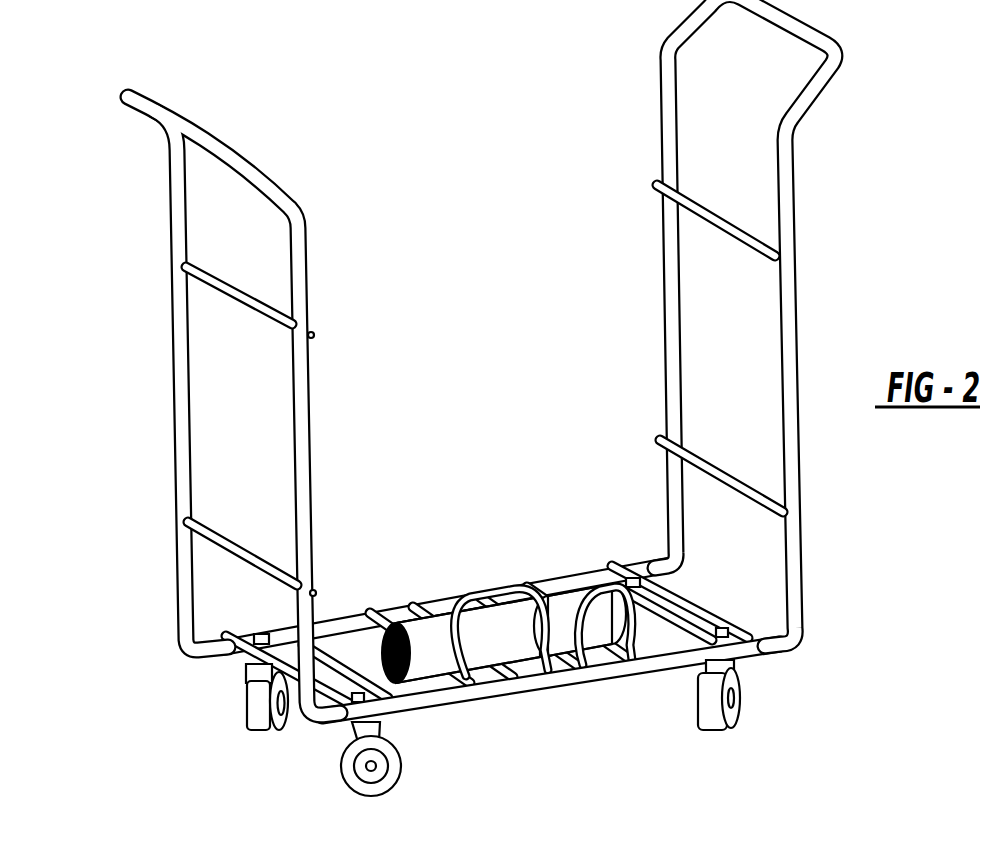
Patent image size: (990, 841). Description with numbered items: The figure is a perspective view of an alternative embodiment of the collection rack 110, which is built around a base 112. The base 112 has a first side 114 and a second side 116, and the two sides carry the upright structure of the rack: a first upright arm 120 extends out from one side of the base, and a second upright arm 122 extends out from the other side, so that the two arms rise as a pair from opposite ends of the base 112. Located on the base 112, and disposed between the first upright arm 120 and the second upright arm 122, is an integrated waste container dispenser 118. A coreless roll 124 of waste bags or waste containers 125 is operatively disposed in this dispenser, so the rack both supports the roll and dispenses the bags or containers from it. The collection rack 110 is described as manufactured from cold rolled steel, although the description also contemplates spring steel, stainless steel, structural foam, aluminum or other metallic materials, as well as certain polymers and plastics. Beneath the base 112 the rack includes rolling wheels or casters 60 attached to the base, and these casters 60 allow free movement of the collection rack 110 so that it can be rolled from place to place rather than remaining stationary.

The collection rack 110 is at (523, 398).
The base 112 is at (763, 640).
The first side 114 is at (672, 665).
The second side 116 is at (573, 605).
The integrated waste container dispenser 118 is at (545, 663).
The first upright arm 120 is at (790, 368).
The second upright arm 122 is at (181, 403).
The coreless roll 124 is at (578, 585).
The waste bags or waste containers 125 is at (507, 623).
The rolling wheels or casters 60 is at (733, 727).